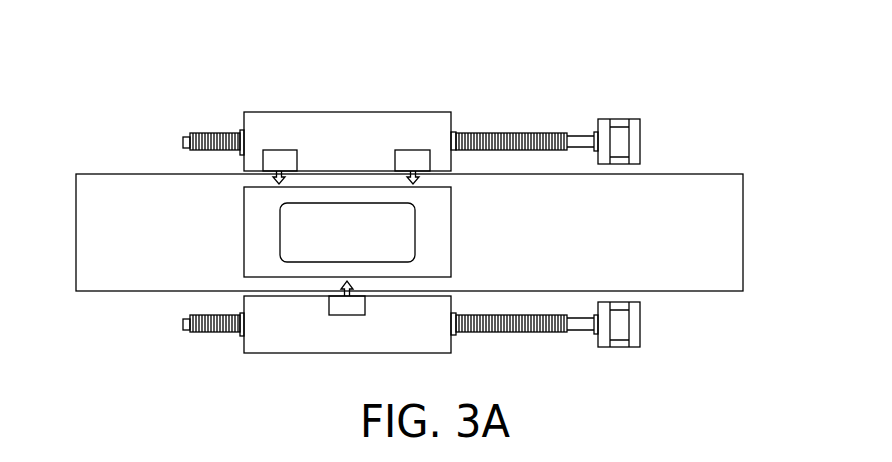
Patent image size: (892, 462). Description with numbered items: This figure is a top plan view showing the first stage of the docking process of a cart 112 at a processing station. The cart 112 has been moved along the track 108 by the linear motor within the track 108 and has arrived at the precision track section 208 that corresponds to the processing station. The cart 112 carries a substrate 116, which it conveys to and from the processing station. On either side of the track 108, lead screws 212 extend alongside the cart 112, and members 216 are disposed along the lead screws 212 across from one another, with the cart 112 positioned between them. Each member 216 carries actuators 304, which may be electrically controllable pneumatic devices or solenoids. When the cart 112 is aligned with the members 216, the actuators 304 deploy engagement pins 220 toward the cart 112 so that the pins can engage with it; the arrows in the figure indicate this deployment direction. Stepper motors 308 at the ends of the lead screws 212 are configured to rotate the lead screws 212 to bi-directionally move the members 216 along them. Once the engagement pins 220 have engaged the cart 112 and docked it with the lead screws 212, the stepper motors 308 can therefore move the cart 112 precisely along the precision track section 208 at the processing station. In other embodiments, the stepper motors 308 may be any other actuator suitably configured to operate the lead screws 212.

The track 108 is at (142, 187).
The cart 112 is at (244, 257).
The substrate 116 is at (280, 215).
The precision track section 208 is at (519, 98).
The lead screw 212 is at (203, 133).
The member 216 is at (250, 122).
The engagement pin 220 is at (287, 180).
The actuator 304 is at (278, 150).
The stepper motor 308 is at (635, 142).